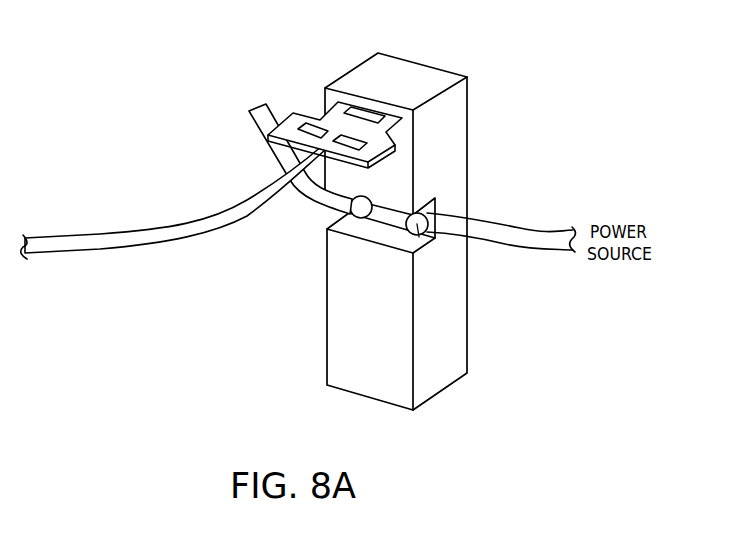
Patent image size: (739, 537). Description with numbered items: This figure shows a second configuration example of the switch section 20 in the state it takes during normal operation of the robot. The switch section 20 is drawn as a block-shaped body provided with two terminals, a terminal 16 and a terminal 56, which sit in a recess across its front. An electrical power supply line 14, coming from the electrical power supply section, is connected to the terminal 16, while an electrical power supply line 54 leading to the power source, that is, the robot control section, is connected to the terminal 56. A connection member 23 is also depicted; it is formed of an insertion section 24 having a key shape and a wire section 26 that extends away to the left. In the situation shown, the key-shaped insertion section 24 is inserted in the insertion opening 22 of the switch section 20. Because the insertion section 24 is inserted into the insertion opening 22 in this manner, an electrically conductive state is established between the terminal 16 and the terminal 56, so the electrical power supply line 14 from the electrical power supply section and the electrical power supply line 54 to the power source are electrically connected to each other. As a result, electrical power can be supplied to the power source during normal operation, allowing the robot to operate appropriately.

The electrical power supply line 14 is at (256, 128).
The terminal 16 is at (348, 208).
The switch section 20 is at (413, 73).
The insertion opening 22 is at (401, 127).
The connection member 23 is at (173, 211).
The insertion section 24 is at (322, 122).
The wire section 26 is at (147, 242).
The electrical power supply line 54 is at (543, 230).
The terminal 56 is at (428, 241).